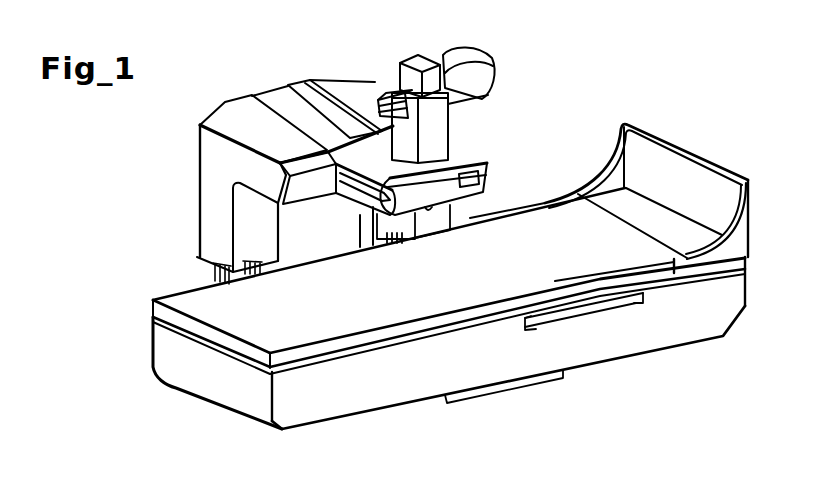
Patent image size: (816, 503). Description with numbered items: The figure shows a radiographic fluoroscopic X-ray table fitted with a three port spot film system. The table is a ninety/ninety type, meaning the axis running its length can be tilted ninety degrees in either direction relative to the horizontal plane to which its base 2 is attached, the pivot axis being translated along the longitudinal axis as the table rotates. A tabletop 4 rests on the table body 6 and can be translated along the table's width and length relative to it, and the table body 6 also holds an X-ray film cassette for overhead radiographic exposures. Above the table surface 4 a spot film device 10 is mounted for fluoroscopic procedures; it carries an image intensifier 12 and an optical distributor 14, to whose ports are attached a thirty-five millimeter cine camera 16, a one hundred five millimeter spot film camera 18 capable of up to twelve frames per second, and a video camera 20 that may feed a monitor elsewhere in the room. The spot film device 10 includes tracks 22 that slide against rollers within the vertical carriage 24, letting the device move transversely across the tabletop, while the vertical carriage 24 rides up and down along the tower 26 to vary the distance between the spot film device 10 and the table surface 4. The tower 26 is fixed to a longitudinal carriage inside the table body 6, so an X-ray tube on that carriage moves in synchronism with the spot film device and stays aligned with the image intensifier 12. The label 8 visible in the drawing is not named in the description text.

The base 2 is at (556, 383).
The tabletop 4 is at (177, 300).
The table body 6 is at (162, 348).
The guide rail 8 is at (632, 294).
The spot film device 10 is at (463, 153).
The image intensifier 12 is at (440, 143).
The optical distributor 14 is at (452, 115).
The 35 millimeter cine camera 16 is at (477, 70).
The 105 millimeter spot film camera 18 is at (387, 90).
The video camera 20 is at (425, 58).
The tracks 22 is at (360, 190).
The vertical carriage 24 is at (211, 182).
The tower 26 is at (217, 270).